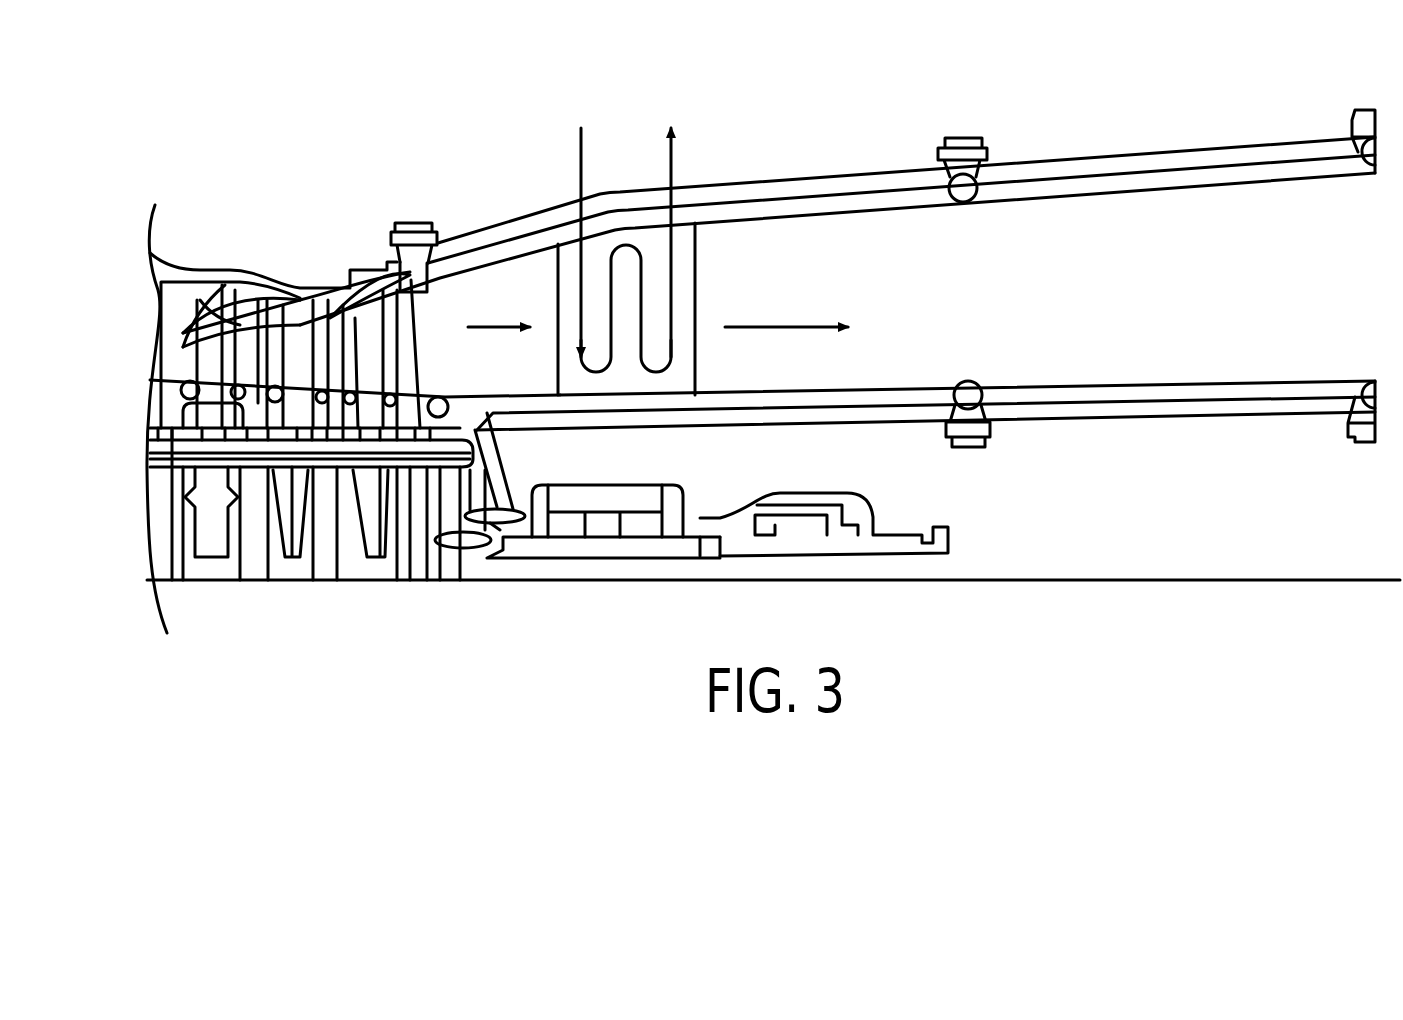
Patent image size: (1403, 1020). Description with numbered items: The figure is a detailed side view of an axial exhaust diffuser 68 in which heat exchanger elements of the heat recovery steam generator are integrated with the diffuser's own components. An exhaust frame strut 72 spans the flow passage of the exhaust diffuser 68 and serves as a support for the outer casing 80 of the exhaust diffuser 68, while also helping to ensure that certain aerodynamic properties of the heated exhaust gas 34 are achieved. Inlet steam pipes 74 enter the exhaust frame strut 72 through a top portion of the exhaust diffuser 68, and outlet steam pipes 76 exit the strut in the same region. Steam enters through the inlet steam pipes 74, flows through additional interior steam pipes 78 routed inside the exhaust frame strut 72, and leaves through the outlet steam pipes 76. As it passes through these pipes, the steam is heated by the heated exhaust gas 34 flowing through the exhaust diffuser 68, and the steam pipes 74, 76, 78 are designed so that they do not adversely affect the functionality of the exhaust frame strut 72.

The exhaust diffuser 68 is at (1205, 83).
The outer casing 80 is at (808, 196).
The exhaust frame strut 72 is at (695, 283).
The inlet steam pipes 74 is at (579, 163).
The outlet steam pipes 76 is at (674, 160).
The interior steam pipes 78 is at (658, 375).
The heated exhaust gas 34 is at (805, 327).